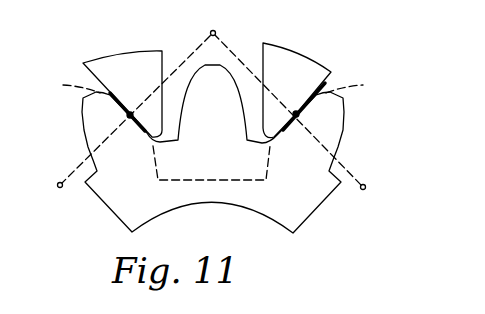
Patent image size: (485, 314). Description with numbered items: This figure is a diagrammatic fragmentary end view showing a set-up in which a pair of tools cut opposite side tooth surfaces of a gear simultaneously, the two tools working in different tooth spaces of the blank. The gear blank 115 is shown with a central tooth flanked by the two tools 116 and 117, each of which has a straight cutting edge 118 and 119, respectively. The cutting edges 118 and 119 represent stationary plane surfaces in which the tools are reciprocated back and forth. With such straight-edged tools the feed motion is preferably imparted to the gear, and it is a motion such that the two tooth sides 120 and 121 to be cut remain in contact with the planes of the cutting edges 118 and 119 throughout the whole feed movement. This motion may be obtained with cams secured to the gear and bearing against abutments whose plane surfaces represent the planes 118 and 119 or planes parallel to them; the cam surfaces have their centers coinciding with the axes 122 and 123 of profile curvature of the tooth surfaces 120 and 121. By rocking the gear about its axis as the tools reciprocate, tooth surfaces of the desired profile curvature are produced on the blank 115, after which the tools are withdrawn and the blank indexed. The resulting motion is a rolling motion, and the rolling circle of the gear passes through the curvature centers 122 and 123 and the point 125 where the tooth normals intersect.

The gear blank 115 is at (287, 205).
The tool 116 is at (147, 64).
The tool 117 is at (293, 63).
The straight cutting edge 118 is at (93, 73).
The straight cutting edge 119 is at (327, 83).
The tooth side 120 is at (106, 97).
The tooth side 121 is at (305, 112).
The axis of profile curvature 122 is at (58, 187).
The axis of profile curvature 123 is at (366, 187).
The point of intersection of the tooth normals 125 is at (215, 31).